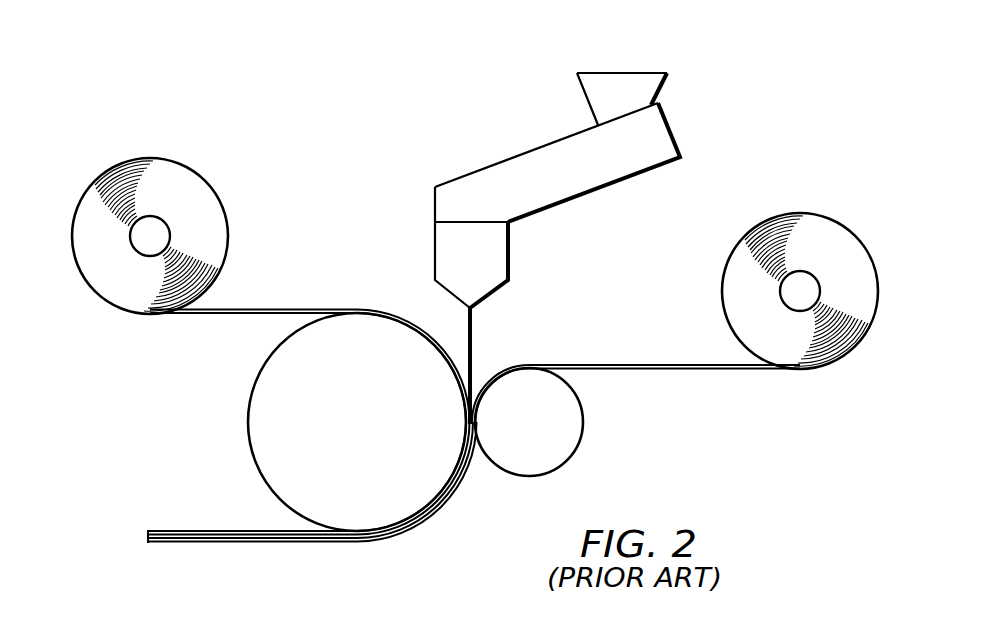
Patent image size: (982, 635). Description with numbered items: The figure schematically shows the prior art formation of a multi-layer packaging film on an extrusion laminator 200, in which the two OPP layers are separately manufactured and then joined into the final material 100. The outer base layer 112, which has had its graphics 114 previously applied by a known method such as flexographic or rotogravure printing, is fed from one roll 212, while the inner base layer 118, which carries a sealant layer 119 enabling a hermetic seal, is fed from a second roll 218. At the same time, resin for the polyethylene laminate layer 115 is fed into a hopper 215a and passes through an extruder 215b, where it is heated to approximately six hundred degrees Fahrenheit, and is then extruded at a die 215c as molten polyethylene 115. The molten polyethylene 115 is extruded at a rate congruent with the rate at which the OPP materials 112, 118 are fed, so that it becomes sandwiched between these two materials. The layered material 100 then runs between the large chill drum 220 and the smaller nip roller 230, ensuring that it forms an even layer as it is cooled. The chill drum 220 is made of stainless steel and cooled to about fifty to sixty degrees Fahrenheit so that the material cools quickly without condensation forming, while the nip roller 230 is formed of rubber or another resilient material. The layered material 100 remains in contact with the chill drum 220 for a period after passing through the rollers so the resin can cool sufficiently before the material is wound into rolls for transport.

The extrusion laminator 200 is at (346, 118).
The roll 218 is at (93, 188).
The inner base layer 118 is at (270, 310).
The sealant layer 119 is at (300, 390).
The chill drum 220 is at (250, 437).
The nip roller 230 is at (582, 436).
The laminate layer 115 is at (475, 331).
The hopper 215a is at (635, 73).
The extruder 215b is at (678, 136).
The die 215c is at (509, 250).
The graphics layer 114 is at (660, 364).
The outer base layer 112 is at (474, 454).
The roll 212 is at (833, 222).
The multi-layer film 100 is at (207, 543).